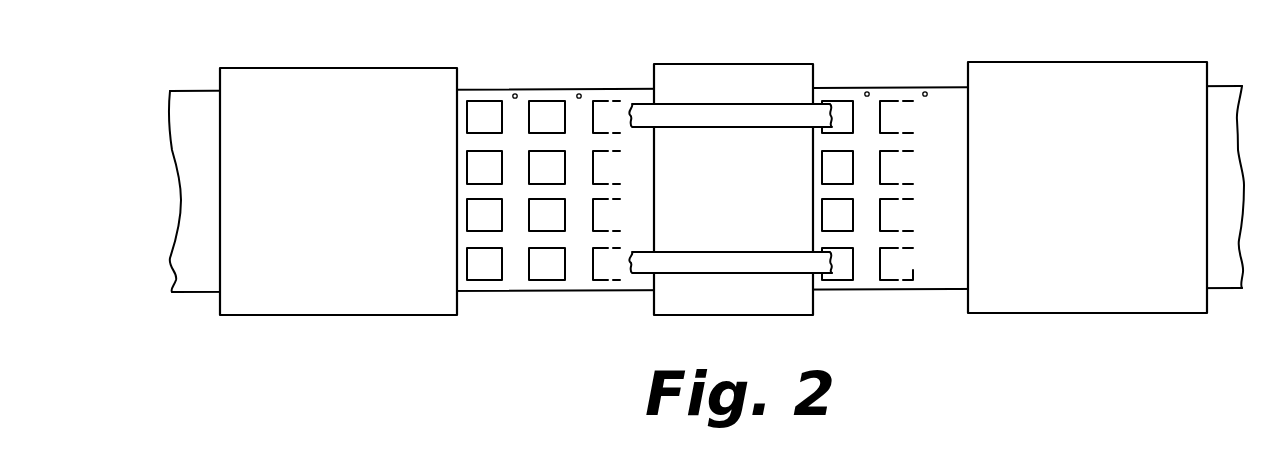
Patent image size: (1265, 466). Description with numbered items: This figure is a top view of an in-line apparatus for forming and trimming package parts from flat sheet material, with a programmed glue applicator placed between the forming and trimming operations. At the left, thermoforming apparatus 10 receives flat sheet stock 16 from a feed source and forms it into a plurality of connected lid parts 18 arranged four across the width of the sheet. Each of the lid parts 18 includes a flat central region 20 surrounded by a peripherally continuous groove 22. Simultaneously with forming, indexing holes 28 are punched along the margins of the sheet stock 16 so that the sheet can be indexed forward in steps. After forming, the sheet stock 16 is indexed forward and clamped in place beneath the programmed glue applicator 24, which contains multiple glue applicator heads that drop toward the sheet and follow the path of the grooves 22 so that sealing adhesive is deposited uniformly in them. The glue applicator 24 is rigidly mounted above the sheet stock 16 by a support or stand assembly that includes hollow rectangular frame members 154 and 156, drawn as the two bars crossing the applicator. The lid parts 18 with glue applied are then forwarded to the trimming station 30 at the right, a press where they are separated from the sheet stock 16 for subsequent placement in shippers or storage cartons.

The thermoforming apparatus 10 is at (281, 67).
The flat sheet stock 16 is at (578, 278).
The lid parts 18 is at (545, 100).
The flat central region 20 is at (550, 268).
The peripherally continuous groove 22 is at (530, 270).
The programmed glue applicator 24 is at (802, 315).
The indexing holes 28 is at (869, 91).
The trimming station 30 is at (1152, 315).
The hollow rectangular frame member 154 is at (708, 263).
The hollow rectangular frame member 156 is at (707, 112).